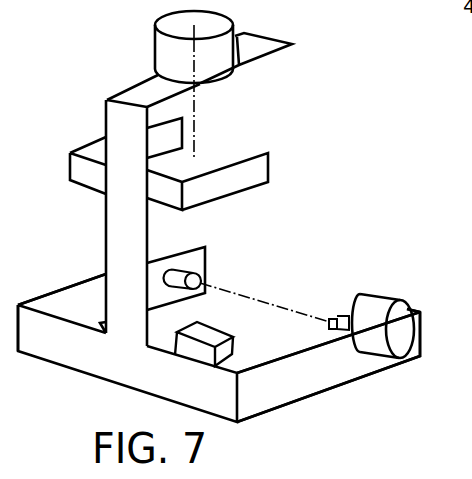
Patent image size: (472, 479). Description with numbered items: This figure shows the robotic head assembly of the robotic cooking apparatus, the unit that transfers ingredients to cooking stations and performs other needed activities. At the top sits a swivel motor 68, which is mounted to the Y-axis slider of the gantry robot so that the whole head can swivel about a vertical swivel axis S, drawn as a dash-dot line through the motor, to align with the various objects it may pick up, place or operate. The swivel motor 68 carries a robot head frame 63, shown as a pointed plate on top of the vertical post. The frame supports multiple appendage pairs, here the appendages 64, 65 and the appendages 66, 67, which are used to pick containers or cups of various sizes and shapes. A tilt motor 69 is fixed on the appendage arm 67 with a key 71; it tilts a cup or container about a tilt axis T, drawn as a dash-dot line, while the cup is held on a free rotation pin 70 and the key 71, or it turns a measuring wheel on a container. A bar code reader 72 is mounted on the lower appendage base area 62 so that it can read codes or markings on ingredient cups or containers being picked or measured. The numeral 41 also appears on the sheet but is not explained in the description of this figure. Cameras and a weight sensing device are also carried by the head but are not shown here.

The lower appendage base area 62 is at (120, 358).
The robot head frame 63 is at (259, 48).
The appendage 64 is at (97, 152).
The appendage 65 is at (246, 175).
The appendage 66 is at (75, 298).
The appendage arm 67 is at (334, 365).
The swivel motor 68 is at (157, 65).
The tilt motor 69 is at (385, 295).
The free rotation pin 70 is at (198, 273).
The key 71 is at (335, 318).
The bar code reader 72 is at (198, 352).
The reference 41 is at (459, 183).
The swivel axis S is at (196, 102).
The tilt axis T is at (248, 293).